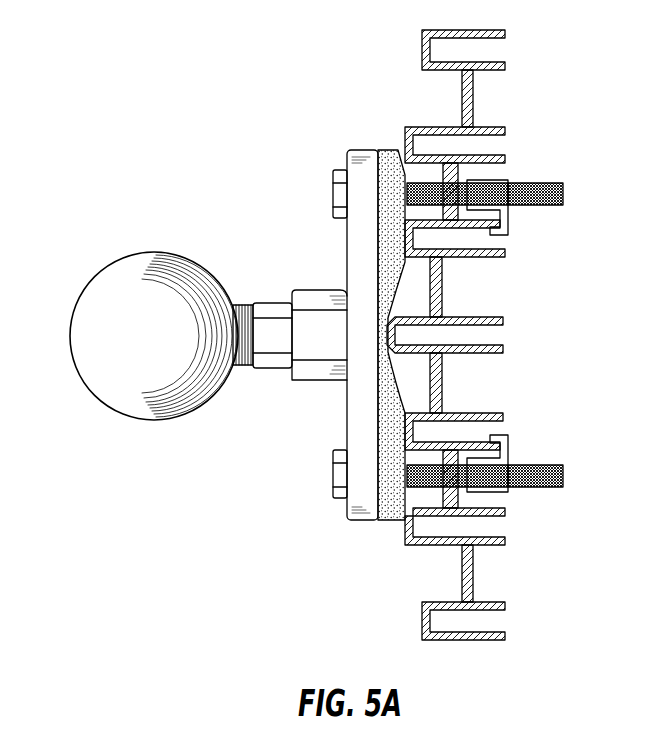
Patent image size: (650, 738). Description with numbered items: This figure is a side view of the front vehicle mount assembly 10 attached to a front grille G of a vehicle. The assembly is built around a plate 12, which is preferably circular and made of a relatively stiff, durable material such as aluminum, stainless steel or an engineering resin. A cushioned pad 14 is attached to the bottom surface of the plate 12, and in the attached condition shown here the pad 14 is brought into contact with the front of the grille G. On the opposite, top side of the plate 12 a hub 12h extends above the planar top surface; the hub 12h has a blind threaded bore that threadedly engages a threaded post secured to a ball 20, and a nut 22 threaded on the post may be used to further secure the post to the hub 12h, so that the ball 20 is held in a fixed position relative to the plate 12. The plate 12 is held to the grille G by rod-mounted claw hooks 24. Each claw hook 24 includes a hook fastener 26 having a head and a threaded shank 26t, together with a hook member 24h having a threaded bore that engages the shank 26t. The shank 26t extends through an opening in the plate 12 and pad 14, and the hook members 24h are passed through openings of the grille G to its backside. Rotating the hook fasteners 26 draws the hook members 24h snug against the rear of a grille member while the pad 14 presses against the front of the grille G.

The front vehicle mount assembly 10 is at (221, 197).
The plate 12 is at (347, 243).
The hub 12h is at (310, 373).
The cushioned pad 14 is at (395, 157).
The ball 20 is at (88, 312).
The nut 22 is at (272, 307).
The rod-mounted claw hook 24 is at (529, 241).
The hook member 24h is at (500, 180).
The hook fastener 26 is at (562, 195).
The threaded shank 26t is at (548, 207).
The grille G is at (480, 316).